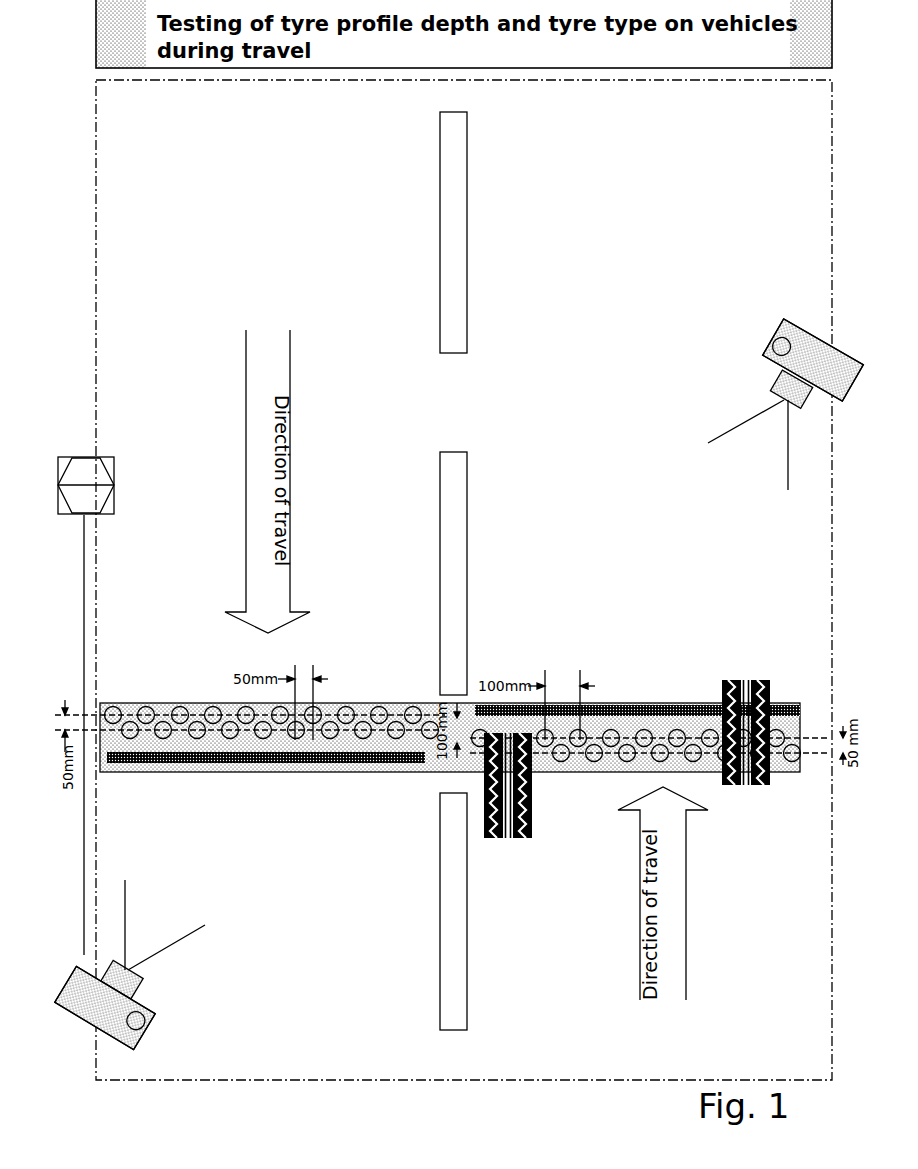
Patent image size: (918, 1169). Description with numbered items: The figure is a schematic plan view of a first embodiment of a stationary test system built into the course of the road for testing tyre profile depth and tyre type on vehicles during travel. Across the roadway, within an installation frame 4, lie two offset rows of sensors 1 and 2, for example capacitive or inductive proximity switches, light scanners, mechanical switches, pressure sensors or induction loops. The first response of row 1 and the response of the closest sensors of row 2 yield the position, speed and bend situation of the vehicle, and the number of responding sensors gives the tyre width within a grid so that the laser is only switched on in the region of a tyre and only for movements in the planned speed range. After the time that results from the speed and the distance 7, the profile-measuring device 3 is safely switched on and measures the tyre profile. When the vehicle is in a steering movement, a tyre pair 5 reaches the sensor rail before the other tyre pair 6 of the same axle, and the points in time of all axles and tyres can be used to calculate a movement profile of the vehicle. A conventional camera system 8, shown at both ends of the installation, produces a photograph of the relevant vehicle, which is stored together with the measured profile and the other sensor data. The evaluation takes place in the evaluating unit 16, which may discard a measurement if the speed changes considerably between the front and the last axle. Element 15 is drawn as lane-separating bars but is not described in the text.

The first sensor row 1 is at (113, 710).
The second sensor row 2 is at (356, 728).
The profile-measuring device 3 is at (272, 763).
The installation frame 4 is at (628, 750).
The first tyre or tyre pair 5 is at (730, 683).
The second tyre or tyre pair 6 is at (505, 838).
The distance to profile-measuring device 7 is at (470, 712).
The camera system 8 is at (760, 353).
The lane separator bar 15 is at (468, 285).
The evaluating unit 16 is at (103, 443).